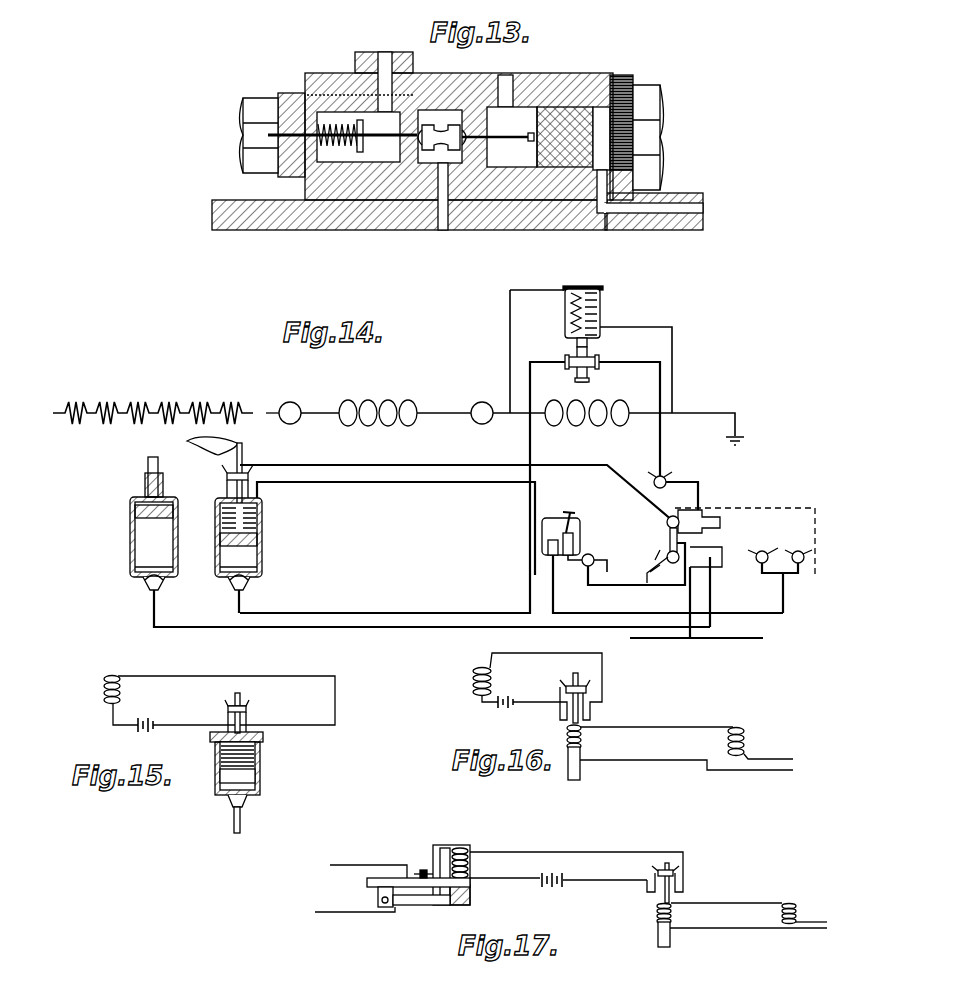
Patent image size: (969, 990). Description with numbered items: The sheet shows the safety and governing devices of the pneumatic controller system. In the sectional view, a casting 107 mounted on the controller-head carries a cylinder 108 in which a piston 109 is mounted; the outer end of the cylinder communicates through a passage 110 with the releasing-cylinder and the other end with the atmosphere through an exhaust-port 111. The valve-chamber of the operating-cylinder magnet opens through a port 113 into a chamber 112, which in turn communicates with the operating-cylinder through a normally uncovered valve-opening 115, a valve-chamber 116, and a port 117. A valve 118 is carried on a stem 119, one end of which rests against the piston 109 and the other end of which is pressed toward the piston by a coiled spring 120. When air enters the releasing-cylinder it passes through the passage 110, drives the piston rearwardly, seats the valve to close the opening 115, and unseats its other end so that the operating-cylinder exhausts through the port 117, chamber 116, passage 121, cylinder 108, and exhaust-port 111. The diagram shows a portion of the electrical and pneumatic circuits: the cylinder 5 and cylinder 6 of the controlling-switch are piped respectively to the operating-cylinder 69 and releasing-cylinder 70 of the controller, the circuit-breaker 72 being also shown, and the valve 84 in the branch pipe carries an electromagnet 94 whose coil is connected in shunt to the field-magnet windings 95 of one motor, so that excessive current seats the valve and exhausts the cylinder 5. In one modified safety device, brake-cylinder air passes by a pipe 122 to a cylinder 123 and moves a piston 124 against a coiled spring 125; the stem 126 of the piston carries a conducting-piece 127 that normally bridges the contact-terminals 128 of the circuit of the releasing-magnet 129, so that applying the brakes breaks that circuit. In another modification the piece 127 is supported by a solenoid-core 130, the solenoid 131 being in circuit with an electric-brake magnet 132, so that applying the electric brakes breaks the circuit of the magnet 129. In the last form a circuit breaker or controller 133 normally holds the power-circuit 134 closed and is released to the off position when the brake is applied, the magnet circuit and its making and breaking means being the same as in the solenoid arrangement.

In FIG. 13, the casting 107 is at (546, 222).
In FIG. 13, the cylinder 108 is at (546, 137).
In FIG. 13, the piston 109 is at (568, 110).
In FIG. 13, the passage 110 is at (672, 200).
In FIG. 13, the exhaust-port 111 is at (510, 80).
In FIG. 13, the chamber 112 is at (375, 132).
In FIG. 13, the port or passage 113 is at (365, 75).
In FIG. 13, the valve-opening 115 is at (402, 140).
In FIG. 13, the valve-chamber 116 is at (440, 136).
In FIG. 13, the port or passage 117 is at (445, 218).
In FIG. 13, the valve 118 is at (449, 137).
In FIG. 13, the stem 119 is at (498, 130).
In FIG. 13, the coiled spring 120 is at (358, 137).
In FIG. 13, the passage 121 is at (512, 137).
In FIG. 14, the electromagnet 94 is at (591, 349).
In FIG. 14, the valve 84 is at (450, 480).
In FIG. 14, the field-magnet windings 95 is at (587, 422).
In FIG. 14, the circuit-breaker 72 is at (662, 556).
In FIG. 14, the operating-cylinder 69 is at (731, 523).
In FIG. 14, the releasing-cylinder 70 is at (721, 592).
In FIG. 14, the cylinder 6 is at (420, 542).
In FIG. 14, the cylinder 5 is at (430, 525).
In FIG. 15, the pipe 122 is at (241, 826).
In FIG. 15, the cylinder 123 is at (258, 792).
In FIG. 15, the piston 124 is at (255, 776).
In FIG. 15, the coiled spring 125 is at (222, 752).
In FIG. 15, the stem 126 is at (248, 733).
In FIG. 15, the conducting-piece 127 is at (248, 707).
In FIG. 16, the conducting-piece 127 is at (586, 689).
In FIG. 17, the conducting-piece 127 is at (676, 875).
In FIG. 15, the contact-terminals 128 is at (228, 709).
In FIG. 16, the contact-terminals 128 is at (567, 686).
In FIG. 17, the contact-terminals 128 is at (658, 872).
In FIG. 15, the releasing-magnet 129 is at (201, 704).
In FIG. 16, the releasing-magnet 129 is at (470, 673).
In FIG. 17, the releasing-magnet 129 is at (462, 822).
In FIG. 16, the solenoid-core 130 is at (680, 764).
In FIG. 17, the solenoid-core 130 is at (672, 943).
In FIG. 16, the solenoid 131 is at (567, 733).
In FIG. 17, the solenoid 131 is at (656, 910).
In FIG. 16, the electric-brake magnet 132 is at (686, 760).
In FIG. 17, the electric-brake magnet 132 is at (749, 927).
In FIG. 17, the circuit breaker or controller 133 is at (418, 892).
In FIG. 17, the power-circuit 134 is at (335, 888).